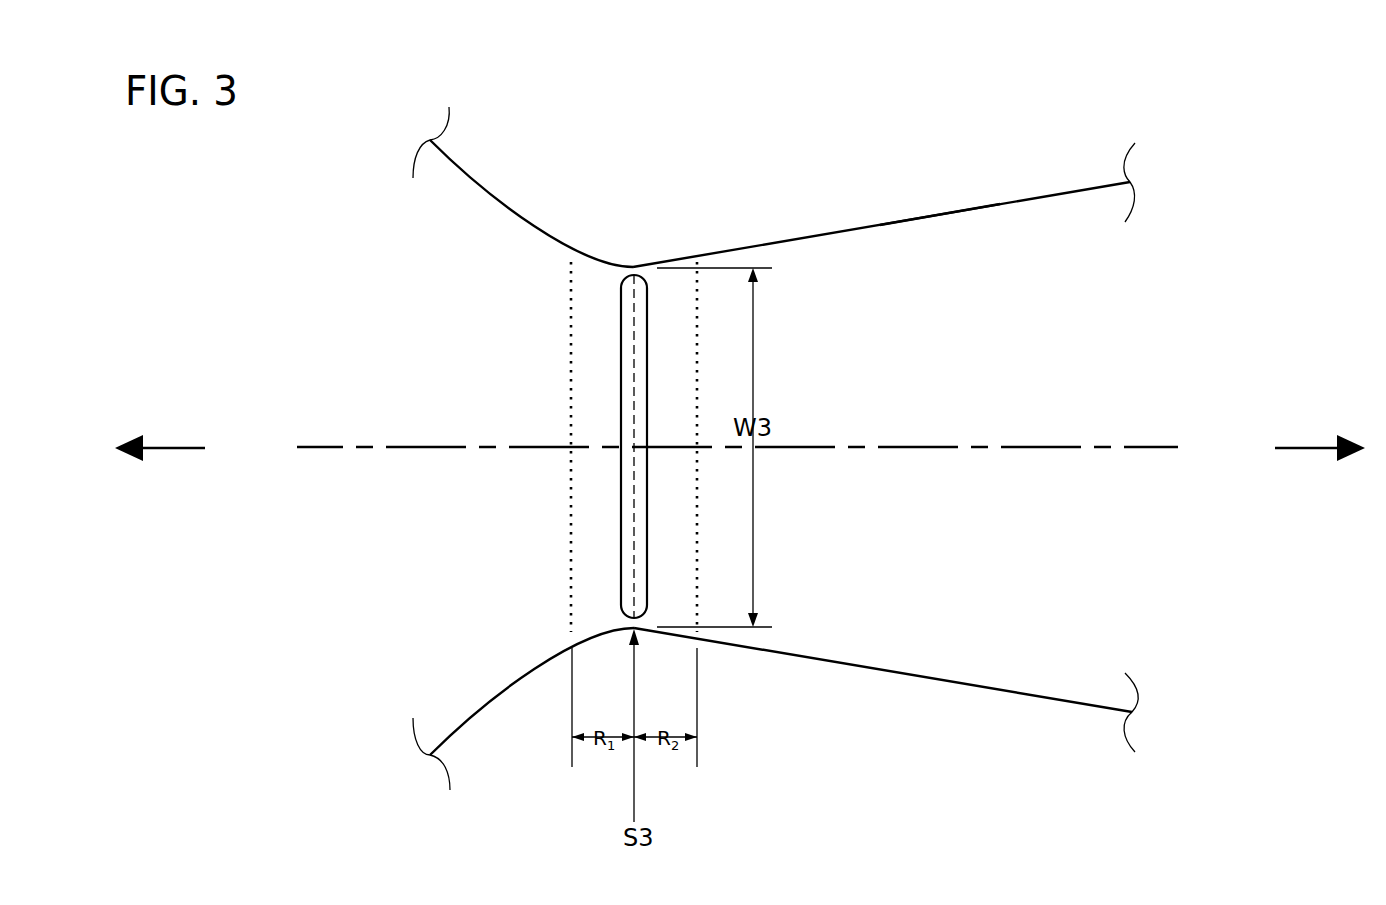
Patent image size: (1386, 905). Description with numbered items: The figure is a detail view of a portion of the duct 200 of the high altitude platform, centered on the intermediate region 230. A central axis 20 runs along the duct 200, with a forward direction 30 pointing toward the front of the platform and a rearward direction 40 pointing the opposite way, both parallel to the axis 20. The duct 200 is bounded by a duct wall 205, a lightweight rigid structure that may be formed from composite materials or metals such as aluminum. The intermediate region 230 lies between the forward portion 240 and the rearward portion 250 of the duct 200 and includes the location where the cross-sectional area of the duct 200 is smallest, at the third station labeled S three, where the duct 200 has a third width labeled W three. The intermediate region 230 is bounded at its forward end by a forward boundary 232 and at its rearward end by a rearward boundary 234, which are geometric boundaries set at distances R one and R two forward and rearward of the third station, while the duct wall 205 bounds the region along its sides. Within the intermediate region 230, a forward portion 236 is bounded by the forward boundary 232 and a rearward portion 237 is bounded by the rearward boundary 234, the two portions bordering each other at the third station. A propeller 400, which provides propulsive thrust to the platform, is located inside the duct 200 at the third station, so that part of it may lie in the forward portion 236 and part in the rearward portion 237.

The central axis 20 is at (368, 449).
The forward direction 30 is at (170, 449).
The rearward direction 40 is at (1300, 449).
The duct 200 is at (775, 448).
The duct wall 205 is at (885, 225).
The intermediate region 230 is at (634, 267).
The forward boundary 232 is at (571, 330).
The rearward boundary 234 is at (697, 330).
The forward portion 236 is at (590, 415).
The rearward portion 237 is at (676, 553).
The forward portion of the duct 240 is at (495, 236).
The rearward portion of the duct 250 is at (955, 236).
The propeller 400 is at (620, 601).